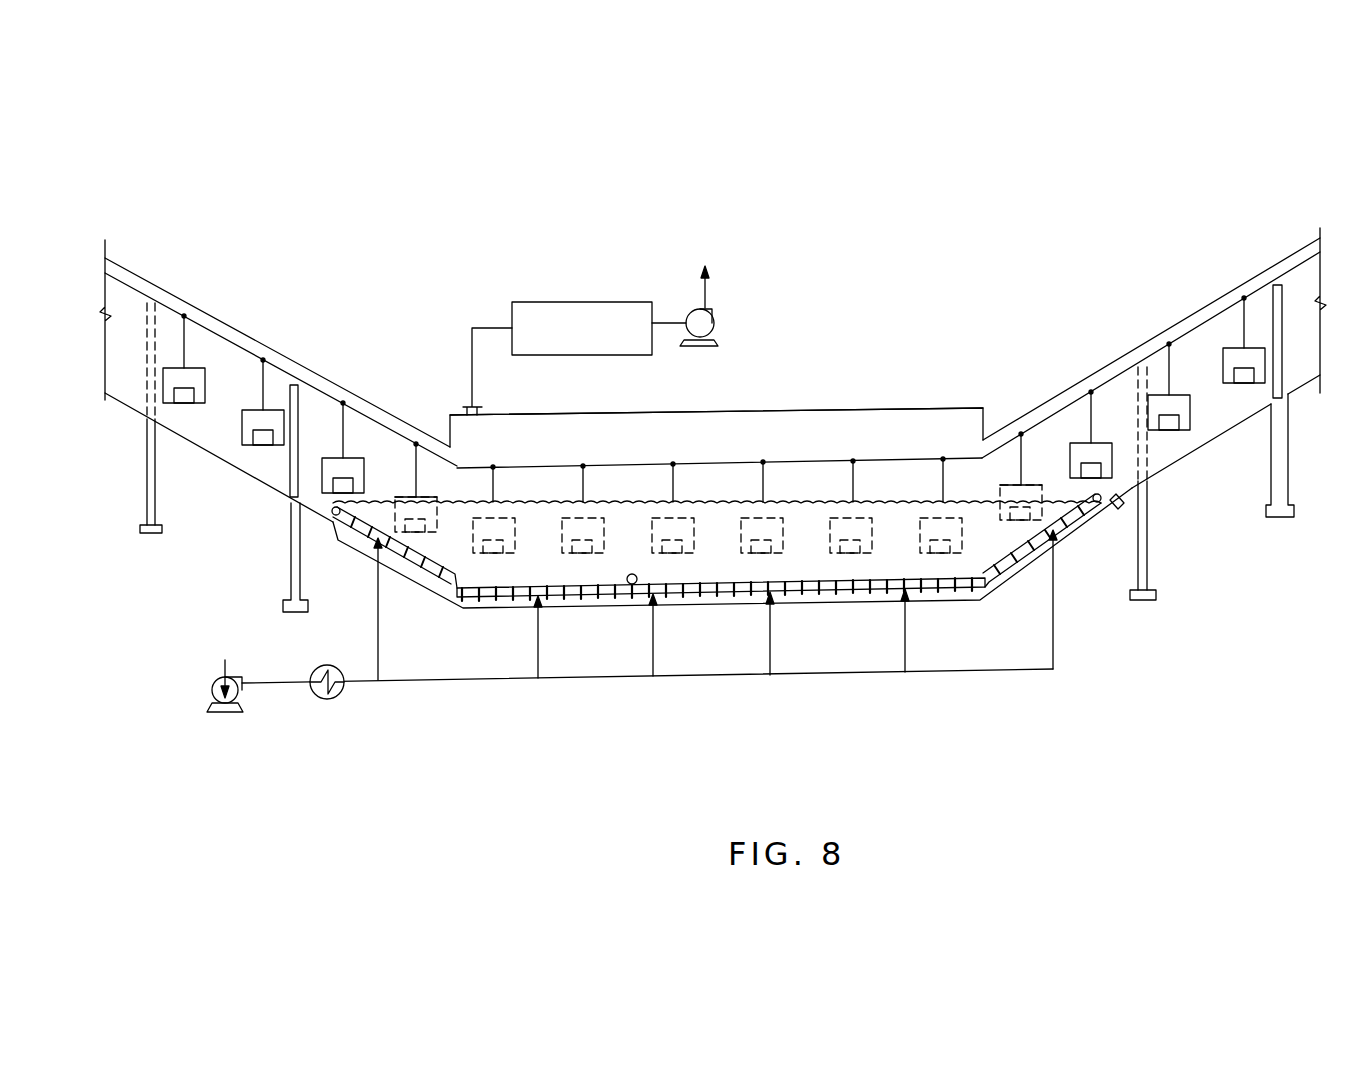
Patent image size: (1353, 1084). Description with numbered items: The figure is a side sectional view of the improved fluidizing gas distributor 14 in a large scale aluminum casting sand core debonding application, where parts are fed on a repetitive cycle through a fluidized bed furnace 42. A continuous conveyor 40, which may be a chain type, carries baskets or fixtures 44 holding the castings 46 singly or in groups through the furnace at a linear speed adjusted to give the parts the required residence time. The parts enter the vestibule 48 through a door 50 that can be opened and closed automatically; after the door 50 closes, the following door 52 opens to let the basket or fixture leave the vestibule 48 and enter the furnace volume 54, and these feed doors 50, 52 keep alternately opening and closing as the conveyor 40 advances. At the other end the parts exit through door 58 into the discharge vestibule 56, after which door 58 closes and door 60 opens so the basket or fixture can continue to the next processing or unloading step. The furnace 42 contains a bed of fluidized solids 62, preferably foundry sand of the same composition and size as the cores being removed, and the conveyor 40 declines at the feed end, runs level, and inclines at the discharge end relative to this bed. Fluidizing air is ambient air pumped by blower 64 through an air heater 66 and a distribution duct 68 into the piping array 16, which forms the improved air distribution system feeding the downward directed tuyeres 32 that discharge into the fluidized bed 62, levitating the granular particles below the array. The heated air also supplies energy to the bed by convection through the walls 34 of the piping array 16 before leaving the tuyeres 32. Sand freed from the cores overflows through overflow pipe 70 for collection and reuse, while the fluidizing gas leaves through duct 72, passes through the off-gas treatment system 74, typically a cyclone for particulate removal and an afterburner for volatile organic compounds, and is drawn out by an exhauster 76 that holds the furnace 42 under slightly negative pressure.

The air supply riser 14 is at (572, 598).
The piping array 16 is at (520, 590).
The downward directed tuyeres 32 is at (710, 593).
The walls of the piping array 34 is at (640, 598).
The conveyor 40 is at (513, 467).
The fluidized bed furnace 42 is at (821, 408).
The baskets or fixtures 44 is at (344, 434).
The castings 46 is at (187, 392).
The vestibule 48 is at (170, 418).
The door 50 is at (146, 395).
The door 52 is at (290, 470).
The furnace volume 54 is at (722, 436).
The discharge vestibule 56 is at (1206, 420).
The door 58 is at (1142, 455).
The door 60 is at (1283, 372).
The bed of fluidized solids 62 is at (903, 576).
The blower 64 is at (238, 698).
The air heater 66 is at (340, 697).
The distribution duct 68 is at (465, 683).
The overflow pipe 70 is at (1113, 510).
The duct 72 is at (470, 350).
The off gas treatment unit 74 is at (545, 302).
The exhauster 76 is at (715, 324).